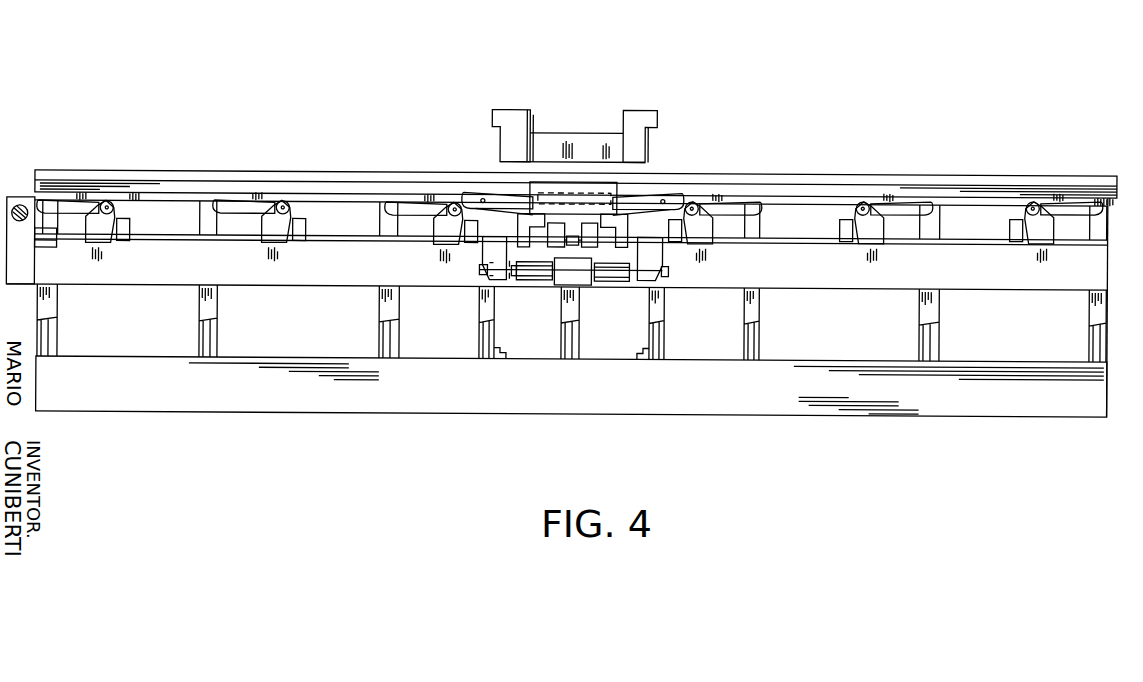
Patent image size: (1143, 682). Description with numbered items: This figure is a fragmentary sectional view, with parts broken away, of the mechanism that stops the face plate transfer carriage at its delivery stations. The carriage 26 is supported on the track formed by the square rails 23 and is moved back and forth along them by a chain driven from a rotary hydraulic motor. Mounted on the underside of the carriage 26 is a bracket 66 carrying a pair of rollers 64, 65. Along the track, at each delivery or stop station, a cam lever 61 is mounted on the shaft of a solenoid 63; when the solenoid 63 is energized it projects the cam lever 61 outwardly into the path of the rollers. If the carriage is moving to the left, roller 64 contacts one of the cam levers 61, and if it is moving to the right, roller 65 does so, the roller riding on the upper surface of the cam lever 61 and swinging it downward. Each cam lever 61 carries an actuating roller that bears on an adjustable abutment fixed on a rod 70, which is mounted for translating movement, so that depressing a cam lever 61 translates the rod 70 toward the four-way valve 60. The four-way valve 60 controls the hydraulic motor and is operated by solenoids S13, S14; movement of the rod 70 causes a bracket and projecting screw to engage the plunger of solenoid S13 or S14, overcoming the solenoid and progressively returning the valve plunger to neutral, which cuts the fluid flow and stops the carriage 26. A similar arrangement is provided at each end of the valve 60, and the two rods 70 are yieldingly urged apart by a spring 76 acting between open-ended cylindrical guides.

The rails 23 is at (1103, 176).
The carriage 26 is at (615, 175).
The four-way valve 60 is at (570, 270).
The cam lever 61 is at (70, 206).
The solenoid 63 is at (292, 203).
The roller 64 is at (464, 193).
The roller 65 is at (664, 196).
The bracket 66 is at (518, 198).
The rod 70 is at (177, 237).
The spring 76 is at (578, 243).
The solenoid S13 is at (614, 270).
The solenoid S14 is at (537, 281).